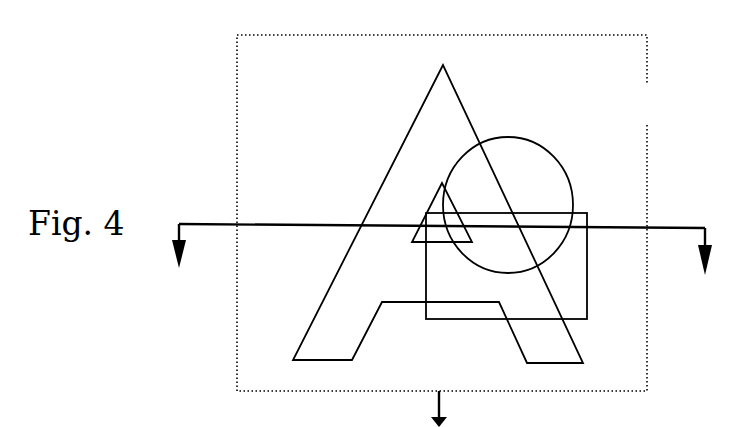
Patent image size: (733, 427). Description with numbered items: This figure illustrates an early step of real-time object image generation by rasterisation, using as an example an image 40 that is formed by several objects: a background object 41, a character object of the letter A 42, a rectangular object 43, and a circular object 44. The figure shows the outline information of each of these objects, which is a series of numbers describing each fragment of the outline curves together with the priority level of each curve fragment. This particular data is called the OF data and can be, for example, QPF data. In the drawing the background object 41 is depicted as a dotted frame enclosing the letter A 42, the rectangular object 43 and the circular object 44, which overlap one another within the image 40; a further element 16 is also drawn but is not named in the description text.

The display / page layout example 40 is at (128, 99).
The page boundary (dotted frame) 41 is at (239, 105).
The letter A text object 42 is at (400, 150).
The scan line 43 is at (438, 325).
The circle graphic object 44 is at (560, 168).
The rectangle object 16 is at (590, 227).